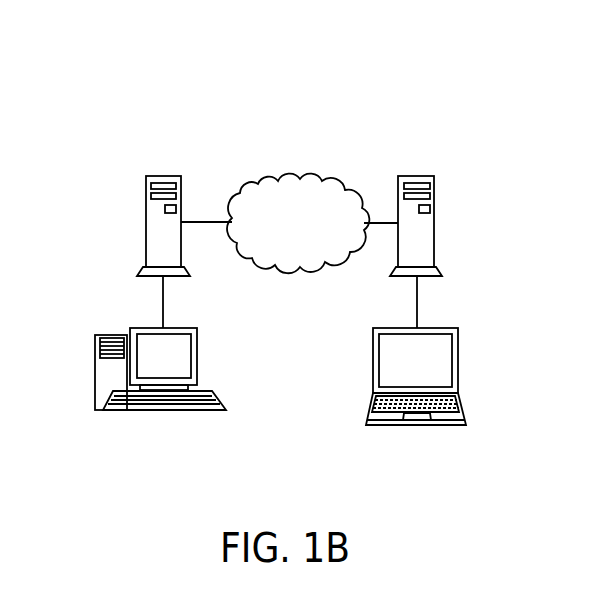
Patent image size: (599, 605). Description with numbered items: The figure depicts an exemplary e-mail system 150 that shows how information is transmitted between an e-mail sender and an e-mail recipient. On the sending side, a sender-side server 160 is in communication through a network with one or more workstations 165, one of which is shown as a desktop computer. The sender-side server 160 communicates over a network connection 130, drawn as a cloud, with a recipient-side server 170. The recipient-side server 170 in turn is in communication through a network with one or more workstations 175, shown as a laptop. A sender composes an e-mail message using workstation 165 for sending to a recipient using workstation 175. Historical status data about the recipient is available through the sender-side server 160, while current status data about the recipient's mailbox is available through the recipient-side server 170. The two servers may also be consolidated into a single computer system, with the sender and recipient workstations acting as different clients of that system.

The e-mail system 150 is at (518, 60).
The network connection 130 is at (291, 180).
The sender-side server 160 is at (146, 183).
The workstation 165 is at (95, 358).
The recipient-side server 170 is at (434, 185).
The workstation 175 is at (458, 362).